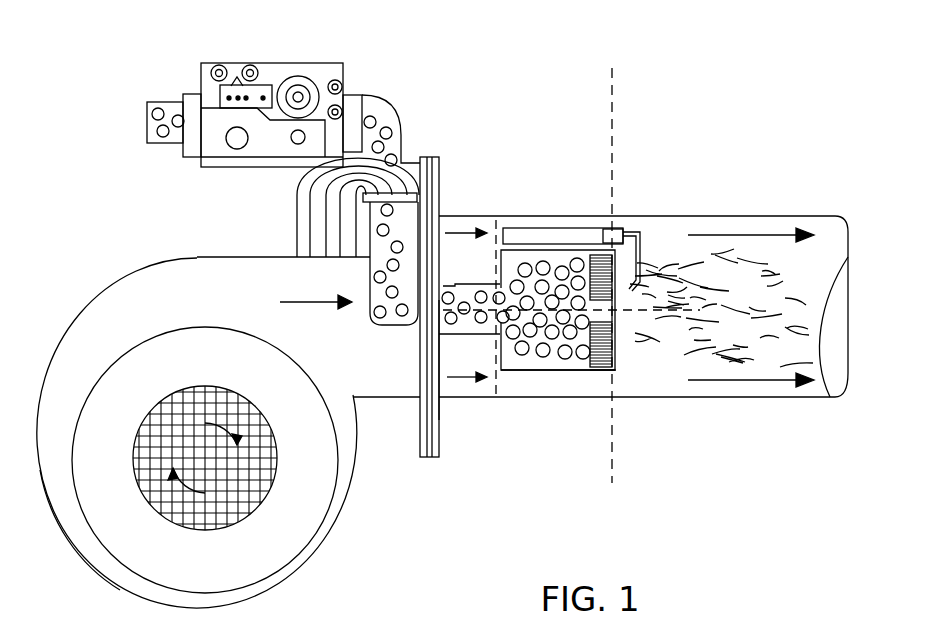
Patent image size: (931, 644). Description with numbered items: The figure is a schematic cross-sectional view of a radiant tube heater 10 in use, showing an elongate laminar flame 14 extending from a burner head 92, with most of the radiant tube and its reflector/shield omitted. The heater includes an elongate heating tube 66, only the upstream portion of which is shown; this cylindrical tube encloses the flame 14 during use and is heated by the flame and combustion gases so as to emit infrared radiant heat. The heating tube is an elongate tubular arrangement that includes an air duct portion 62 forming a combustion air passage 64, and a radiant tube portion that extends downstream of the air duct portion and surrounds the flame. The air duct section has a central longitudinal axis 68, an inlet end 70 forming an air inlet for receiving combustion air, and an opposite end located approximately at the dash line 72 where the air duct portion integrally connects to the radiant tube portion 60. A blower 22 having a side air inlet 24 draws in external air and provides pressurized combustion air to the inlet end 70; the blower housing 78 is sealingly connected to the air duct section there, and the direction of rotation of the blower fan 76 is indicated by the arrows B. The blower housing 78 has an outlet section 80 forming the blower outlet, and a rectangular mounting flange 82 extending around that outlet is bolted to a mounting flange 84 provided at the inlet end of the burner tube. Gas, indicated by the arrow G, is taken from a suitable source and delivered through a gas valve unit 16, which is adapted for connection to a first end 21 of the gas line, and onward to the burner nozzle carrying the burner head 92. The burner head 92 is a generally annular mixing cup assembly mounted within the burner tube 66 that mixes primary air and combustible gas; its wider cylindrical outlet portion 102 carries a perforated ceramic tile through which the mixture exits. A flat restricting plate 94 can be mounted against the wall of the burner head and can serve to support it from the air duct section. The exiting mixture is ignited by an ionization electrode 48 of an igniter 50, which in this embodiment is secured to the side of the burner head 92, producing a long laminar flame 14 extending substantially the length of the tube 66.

The fiber blowing apparatus 10 is at (455, 92).
The elongate flame 14 is at (738, 306).
The gas valve unit 16 is at (237, 63).
The first end of gas line 21 is at (369, 104).
The blower 22 is at (133, 308).
The side air inlet 24 is at (250, 500).
The ionization electrode 48 is at (642, 247).
The igniter 50 is at (612, 232).
The mixing duct 60 is at (530, 185).
The air duct portion 62 is at (555, 227).
The air passage 64 is at (588, 382).
The heating tube 66 is at (787, 216).
The central longitudinal axis 68 is at (632, 313).
The inlet end 70 is at (450, 218).
The dash line 72 is at (613, 97).
The blower face 76 is at (307, 487).
The blower housing 78 is at (62, 542).
The outlet section 80 is at (373, 398).
The mounting flange 82 is at (422, 458).
The mounting flange 84 is at (442, 418).
The burner head 92 is at (527, 372).
The restricting plate 94 is at (494, 226).
The outlet portion 102 is at (550, 372).
The gas G is at (120, 123).
The direction of rotation B is at (210, 495).